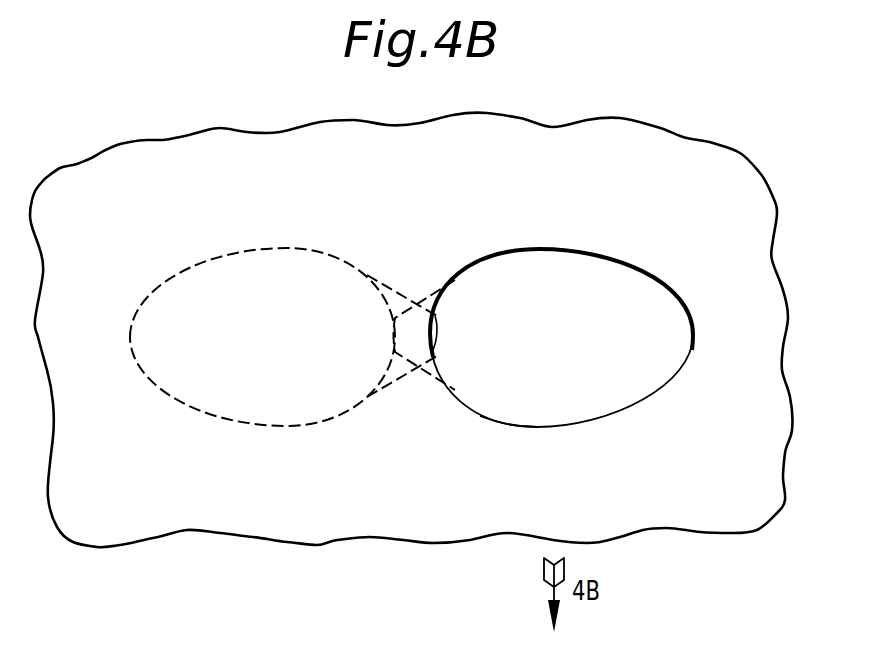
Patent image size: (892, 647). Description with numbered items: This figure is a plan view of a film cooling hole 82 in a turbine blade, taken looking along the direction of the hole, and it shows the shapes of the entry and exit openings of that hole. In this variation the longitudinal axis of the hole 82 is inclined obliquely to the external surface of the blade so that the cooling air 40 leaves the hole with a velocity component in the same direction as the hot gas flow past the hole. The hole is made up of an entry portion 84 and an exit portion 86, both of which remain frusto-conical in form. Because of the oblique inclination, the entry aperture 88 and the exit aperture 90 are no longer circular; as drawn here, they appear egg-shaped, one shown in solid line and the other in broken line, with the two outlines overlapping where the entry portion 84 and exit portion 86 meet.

The cooling air 40 is at (567, 305).
The film cooling hole 82 is at (540, 248).
The entry portion 84 is at (613, 363).
The exit portion 86 is at (225, 371).
The entry aperture 88 is at (530, 427).
The exit aperture 90 is at (300, 425).